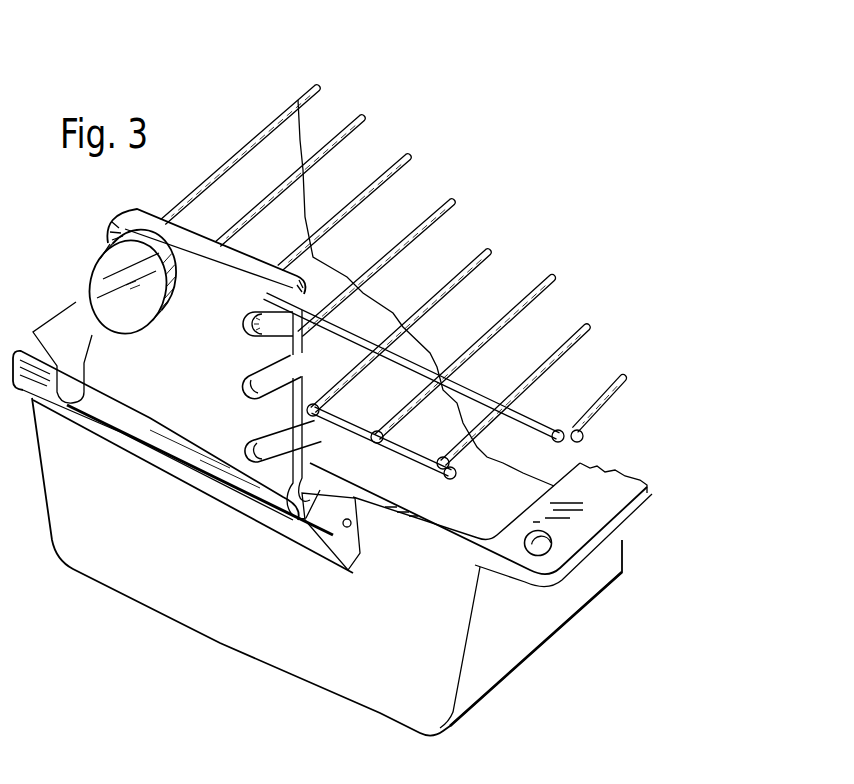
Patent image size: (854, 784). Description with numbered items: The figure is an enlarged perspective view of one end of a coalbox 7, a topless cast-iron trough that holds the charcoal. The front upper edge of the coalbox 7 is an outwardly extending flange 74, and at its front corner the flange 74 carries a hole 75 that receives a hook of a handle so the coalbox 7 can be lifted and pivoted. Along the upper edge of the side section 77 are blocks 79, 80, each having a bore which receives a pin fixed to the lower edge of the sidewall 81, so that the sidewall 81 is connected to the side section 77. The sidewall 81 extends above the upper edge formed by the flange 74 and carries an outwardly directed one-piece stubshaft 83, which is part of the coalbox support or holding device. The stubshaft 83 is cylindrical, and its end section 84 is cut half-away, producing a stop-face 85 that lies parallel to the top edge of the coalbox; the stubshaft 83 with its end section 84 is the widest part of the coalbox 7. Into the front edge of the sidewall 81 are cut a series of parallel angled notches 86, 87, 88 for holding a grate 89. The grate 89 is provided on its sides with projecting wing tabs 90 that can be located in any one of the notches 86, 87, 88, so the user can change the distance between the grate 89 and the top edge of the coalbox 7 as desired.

The coalbox 7 is at (525, 686).
The flange 74 is at (607, 505).
The hole 75 is at (541, 548).
The side section 77 is at (222, 626).
The block 79 is at (323, 530).
The block 80 is at (24, 384).
The sidewall 81 is at (151, 376).
The stubshaft 83 is at (96, 271).
The end section 84 is at (102, 300).
The stop-face 85 is at (112, 282).
The notch 86 is at (253, 447).
The notch 87 is at (251, 388).
The notch 88 is at (250, 330).
The grate 89 is at (249, 201).
The wing tab 90 is at (280, 450).